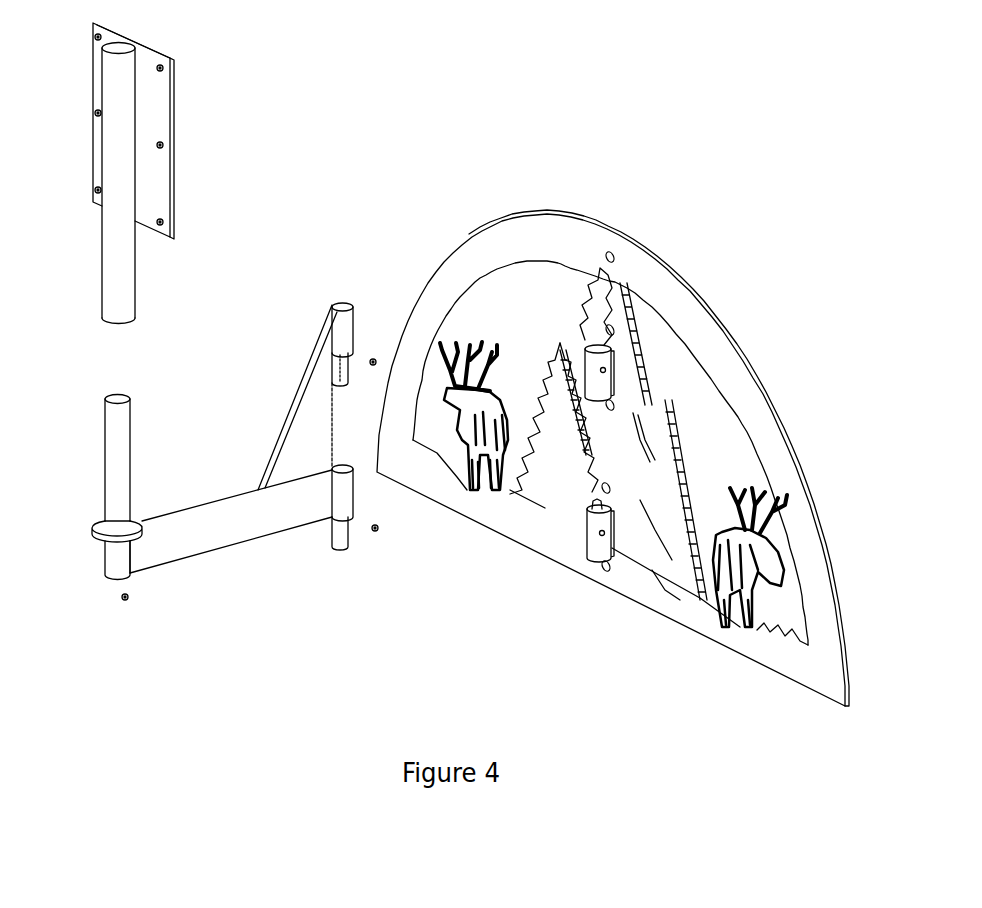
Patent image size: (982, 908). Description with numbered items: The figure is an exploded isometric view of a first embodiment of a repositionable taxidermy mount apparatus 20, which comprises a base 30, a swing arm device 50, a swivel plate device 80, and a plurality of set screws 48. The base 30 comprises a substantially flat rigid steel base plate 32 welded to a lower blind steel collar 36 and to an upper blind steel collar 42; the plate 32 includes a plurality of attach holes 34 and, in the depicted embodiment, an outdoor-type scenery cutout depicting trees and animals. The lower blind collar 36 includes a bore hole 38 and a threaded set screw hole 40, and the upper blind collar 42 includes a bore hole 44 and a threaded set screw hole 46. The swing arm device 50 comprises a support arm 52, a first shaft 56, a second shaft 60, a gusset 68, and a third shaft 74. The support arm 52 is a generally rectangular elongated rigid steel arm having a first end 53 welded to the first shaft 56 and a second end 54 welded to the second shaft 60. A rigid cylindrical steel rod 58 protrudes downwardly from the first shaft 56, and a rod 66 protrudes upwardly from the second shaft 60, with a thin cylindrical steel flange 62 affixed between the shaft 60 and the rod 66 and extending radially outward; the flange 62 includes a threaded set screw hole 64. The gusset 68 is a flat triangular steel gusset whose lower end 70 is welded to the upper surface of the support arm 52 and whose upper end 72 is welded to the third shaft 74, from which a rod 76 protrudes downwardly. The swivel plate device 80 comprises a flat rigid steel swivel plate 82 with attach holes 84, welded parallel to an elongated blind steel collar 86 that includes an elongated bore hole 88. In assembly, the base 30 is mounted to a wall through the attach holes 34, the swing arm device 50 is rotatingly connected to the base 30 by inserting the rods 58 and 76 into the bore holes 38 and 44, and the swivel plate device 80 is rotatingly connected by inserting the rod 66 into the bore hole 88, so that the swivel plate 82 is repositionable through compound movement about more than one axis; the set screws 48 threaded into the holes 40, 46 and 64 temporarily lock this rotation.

The repositionable taxidermy mount apparatus 20 is at (430, 685).
The base 30 is at (590, 625).
The base plate 32 is at (680, 275).
The attach holes 34 is at (612, 250).
The lower blind collar 36 is at (586, 553).
The bore hole 38 is at (604, 506).
The threaded set screw hole 40 is at (604, 539).
The upper blind collar 42 is at (595, 382).
The bore hole 44 is at (593, 343).
The threaded set screw hole 46 is at (608, 367).
The set screw 48 is at (130, 603).
The swing arm device 50 is at (252, 593).
The support arm 52 is at (245, 490).
The first end 53 is at (325, 500).
The second end 54 is at (142, 552).
The first shaft 56 is at (355, 495).
The rod 58 is at (340, 550).
The second shaft 60 is at (110, 582).
The flange 62 is at (95, 538).
The threaded set screw hole 64 is at (132, 528).
The rod 66 is at (133, 420).
The gusset 68 is at (295, 390).
The lower end 70 is at (305, 468).
The upper end 72 is at (325, 360).
The third shaft 74 is at (347, 332).
The rod 76 is at (343, 368).
The swivel plate device 80 is at (187, 178).
The swivel plate 82 is at (155, 45).
The attach holes 84 is at (165, 142).
The elongated blind collar 86 is at (135, 262).
The elongated bore hole 88 is at (120, 322).